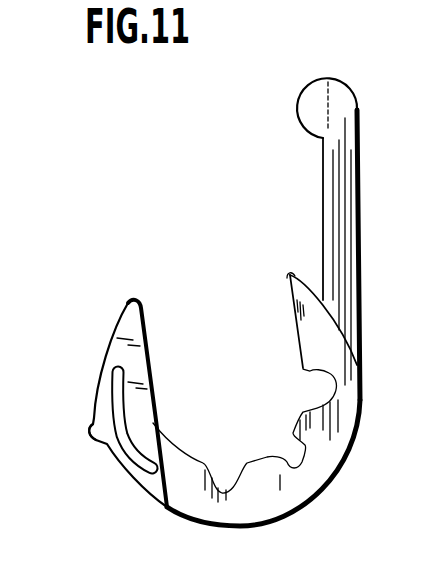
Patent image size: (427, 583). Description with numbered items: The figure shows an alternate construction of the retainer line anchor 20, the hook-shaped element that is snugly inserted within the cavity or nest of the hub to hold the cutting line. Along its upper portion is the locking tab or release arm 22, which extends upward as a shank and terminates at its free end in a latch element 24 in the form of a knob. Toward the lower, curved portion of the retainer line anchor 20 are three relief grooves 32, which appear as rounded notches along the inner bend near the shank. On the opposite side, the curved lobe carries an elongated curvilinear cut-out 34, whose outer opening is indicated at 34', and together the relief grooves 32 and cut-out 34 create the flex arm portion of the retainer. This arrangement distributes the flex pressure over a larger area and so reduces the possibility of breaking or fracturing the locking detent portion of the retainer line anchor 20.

The retainer line anchor 20 is at (352, 445).
The locking tab or release arm 22 is at (360, 236).
The latch element 24 is at (297, 104).
The relief grooves 32 is at (310, 383).
The elongated curvilinear cut-out 34 is at (106, 438).
The slot opening 34' is at (70, 416).